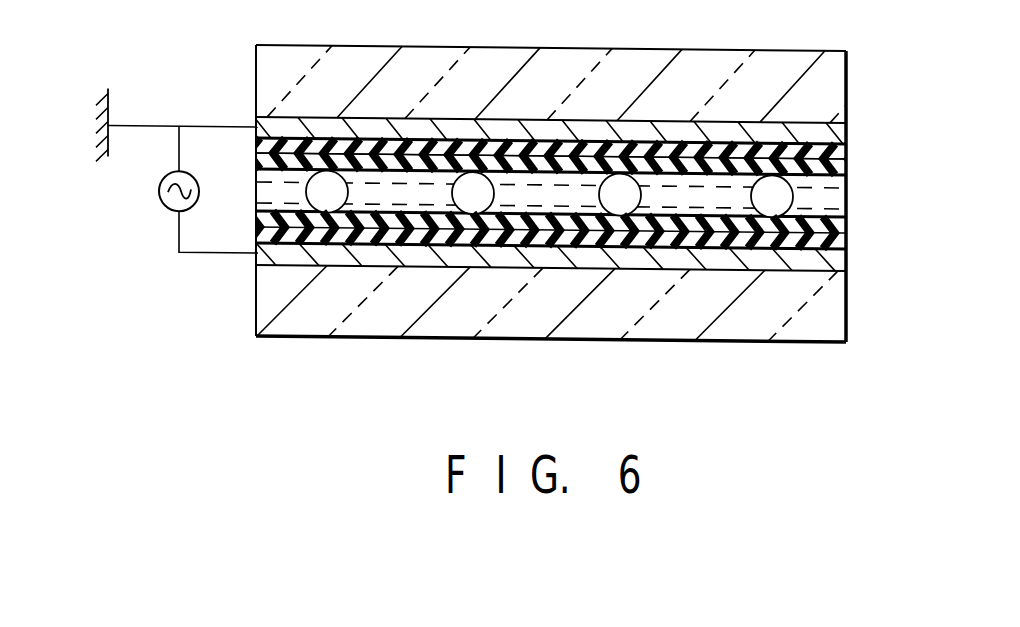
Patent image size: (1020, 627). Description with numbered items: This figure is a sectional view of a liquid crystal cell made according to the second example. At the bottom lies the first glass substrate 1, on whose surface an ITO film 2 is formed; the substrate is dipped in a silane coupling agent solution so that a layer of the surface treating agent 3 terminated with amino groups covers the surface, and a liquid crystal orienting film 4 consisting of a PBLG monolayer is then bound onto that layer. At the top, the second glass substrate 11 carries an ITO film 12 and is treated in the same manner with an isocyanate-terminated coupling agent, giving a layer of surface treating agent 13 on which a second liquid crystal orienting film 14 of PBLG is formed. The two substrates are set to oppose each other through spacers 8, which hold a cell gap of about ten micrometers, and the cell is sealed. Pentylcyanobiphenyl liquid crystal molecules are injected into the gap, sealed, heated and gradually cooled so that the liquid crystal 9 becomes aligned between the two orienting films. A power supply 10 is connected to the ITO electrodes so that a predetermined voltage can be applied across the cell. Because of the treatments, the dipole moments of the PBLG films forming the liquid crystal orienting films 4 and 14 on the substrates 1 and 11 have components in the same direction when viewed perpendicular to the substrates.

The first glass substrate 1 is at (836, 316).
The ITO film 2 is at (846, 251).
The layer of the surface treating agent 3 is at (846, 232).
The liquid crystal orienting film 4 is at (846, 217).
The spacers 8 is at (328, 197).
The liquid crystal 9 is at (534, 197).
The power supply 10 is at (160, 189).
The second glass substrate 11 is at (846, 70).
The ITO film 12 is at (846, 124).
The layer of surface treating agent 13 is at (846, 147).
The liquid crystal orienting film 14 is at (846, 164).